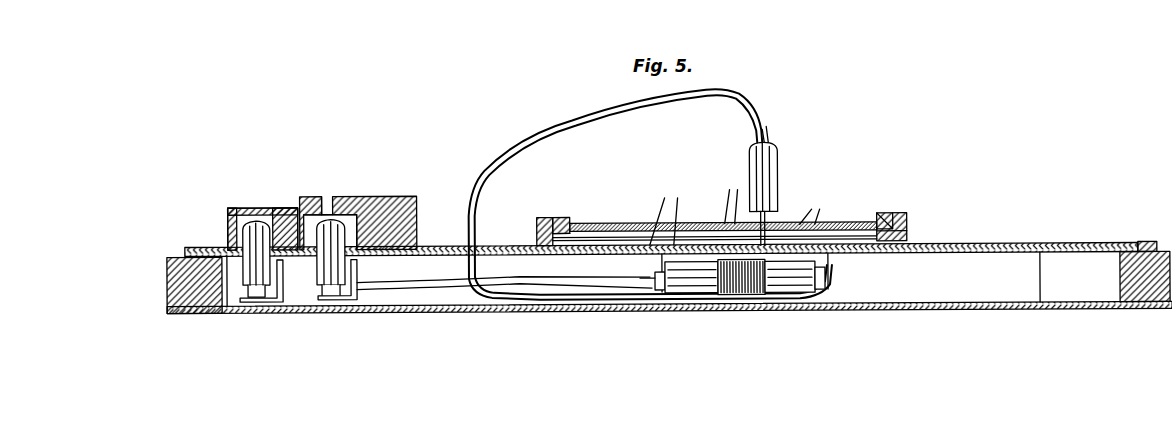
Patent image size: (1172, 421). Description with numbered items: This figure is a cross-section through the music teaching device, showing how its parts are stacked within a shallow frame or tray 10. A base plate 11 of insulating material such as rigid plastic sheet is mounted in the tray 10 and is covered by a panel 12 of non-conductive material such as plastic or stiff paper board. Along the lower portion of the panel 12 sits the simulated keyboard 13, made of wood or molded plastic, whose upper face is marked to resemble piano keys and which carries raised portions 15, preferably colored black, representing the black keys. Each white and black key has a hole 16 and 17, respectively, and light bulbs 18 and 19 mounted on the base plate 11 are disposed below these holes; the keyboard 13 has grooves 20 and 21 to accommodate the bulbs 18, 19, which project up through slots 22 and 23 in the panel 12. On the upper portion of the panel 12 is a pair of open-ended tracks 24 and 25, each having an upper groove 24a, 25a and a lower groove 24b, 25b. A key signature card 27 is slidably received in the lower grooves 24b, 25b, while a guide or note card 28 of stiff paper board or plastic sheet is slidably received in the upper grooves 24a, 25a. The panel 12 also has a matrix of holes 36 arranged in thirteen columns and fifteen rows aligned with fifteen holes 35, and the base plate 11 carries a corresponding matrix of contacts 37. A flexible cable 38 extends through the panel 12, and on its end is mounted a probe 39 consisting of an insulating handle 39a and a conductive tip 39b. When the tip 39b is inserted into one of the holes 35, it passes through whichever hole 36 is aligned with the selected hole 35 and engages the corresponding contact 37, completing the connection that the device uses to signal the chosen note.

The frame or tray 10 is at (1085, 311).
The base plate 11 is at (1018, 256).
The panel 12 is at (1035, 244).
The simulated keyboard 13 is at (385, 218).
The raised portions 15 is at (311, 194).
The hole 16 is at (258, 207).
The hole 17 is at (328, 195).
The light bulb 18 is at (245, 240).
The light bulb 19 is at (332, 228).
The groove 20 is at (273, 220).
The groove 21 is at (350, 232).
The slot 22 is at (268, 301).
The slot 23 is at (345, 300).
The track 24 is at (550, 216).
The upper groove 24a is at (570, 221).
The lower groove 24b is at (580, 226).
The track 25 is at (906, 214).
The upper groove 25a is at (882, 216).
The lower groove 25b is at (908, 236).
The key signature card 27 is at (695, 237).
The guide or note card 28 is at (845, 225).
The holes 35 is at (776, 197).
The holes 36 is at (663, 212).
The contacts 37 is at (855, 253).
The flexible cable 38 is at (570, 118).
The probe 39 is at (748, 155).
The insulating handle 39a is at (770, 148).
The conductive tip 39b is at (768, 215).